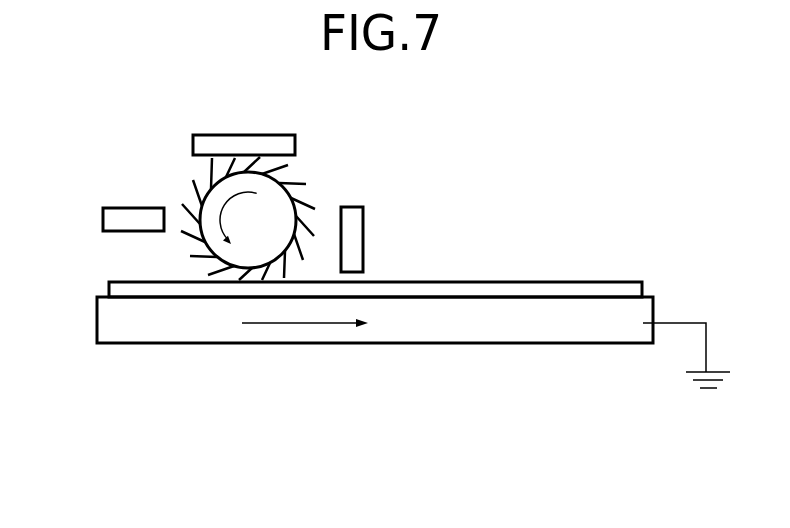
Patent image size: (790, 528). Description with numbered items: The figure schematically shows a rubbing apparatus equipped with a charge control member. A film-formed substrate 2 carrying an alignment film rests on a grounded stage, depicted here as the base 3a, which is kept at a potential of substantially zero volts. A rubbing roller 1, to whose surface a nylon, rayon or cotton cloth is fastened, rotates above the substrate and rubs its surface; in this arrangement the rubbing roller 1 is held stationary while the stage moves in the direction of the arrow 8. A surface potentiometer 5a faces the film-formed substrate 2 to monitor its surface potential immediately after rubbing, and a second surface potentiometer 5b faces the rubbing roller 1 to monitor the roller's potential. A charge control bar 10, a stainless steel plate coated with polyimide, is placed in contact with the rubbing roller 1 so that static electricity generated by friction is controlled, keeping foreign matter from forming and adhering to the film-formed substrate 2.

The rubbing roller 1 is at (317, 176).
The film-formed substrate 2 is at (493, 281).
The base / electrode 3a is at (360, 355).
The surface potentiometer 5a is at (92, 230).
The surface potentiometer 5b is at (370, 220).
The arrow 8 is at (273, 330).
The charge control bar 10 is at (227, 122).